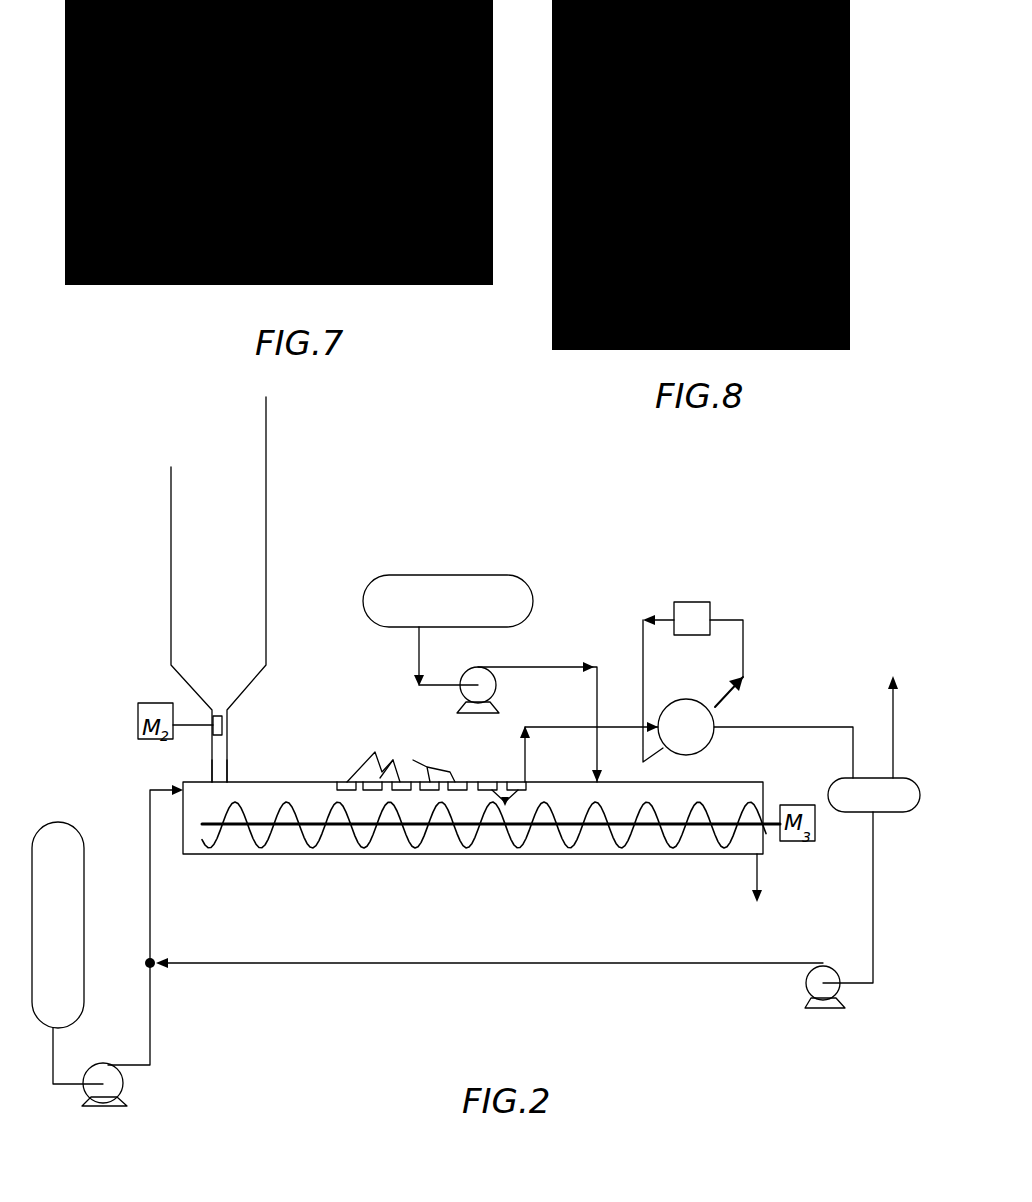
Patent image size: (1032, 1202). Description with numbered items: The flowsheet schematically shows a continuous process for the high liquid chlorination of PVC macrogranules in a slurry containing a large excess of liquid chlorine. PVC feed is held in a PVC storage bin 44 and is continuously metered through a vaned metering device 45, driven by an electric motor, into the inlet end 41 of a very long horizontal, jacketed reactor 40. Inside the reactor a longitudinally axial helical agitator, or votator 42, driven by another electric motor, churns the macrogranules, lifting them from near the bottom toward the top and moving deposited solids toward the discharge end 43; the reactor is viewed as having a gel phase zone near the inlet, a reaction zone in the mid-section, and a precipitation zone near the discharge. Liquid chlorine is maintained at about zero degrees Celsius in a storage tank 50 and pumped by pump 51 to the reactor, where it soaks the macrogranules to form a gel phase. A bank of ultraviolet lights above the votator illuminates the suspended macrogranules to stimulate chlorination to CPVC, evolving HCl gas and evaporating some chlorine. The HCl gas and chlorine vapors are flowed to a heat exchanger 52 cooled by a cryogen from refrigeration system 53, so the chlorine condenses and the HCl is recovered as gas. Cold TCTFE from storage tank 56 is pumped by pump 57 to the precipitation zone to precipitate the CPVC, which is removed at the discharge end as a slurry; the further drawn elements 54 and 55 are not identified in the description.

The reactor 40 is at (313, 779).
The inlet end 41 is at (232, 778).
The helical agitator (votator) 42 is at (297, 849).
The discharge end 43 is at (802, 852).
The PVC storage bin 44 is at (266, 587).
The vaned metering device 45 is at (216, 716).
The storage tank 50 is at (67, 953).
The pump 51 is at (124, 1080).
The heat exchanger 52 is at (713, 718).
The refrigeration system 53 is at (712, 604).
The separator drum 54 is at (904, 815).
The recycle pump 55 is at (805, 987).
The storage tank 56 is at (420, 615).
The pump 57 is at (496, 684).